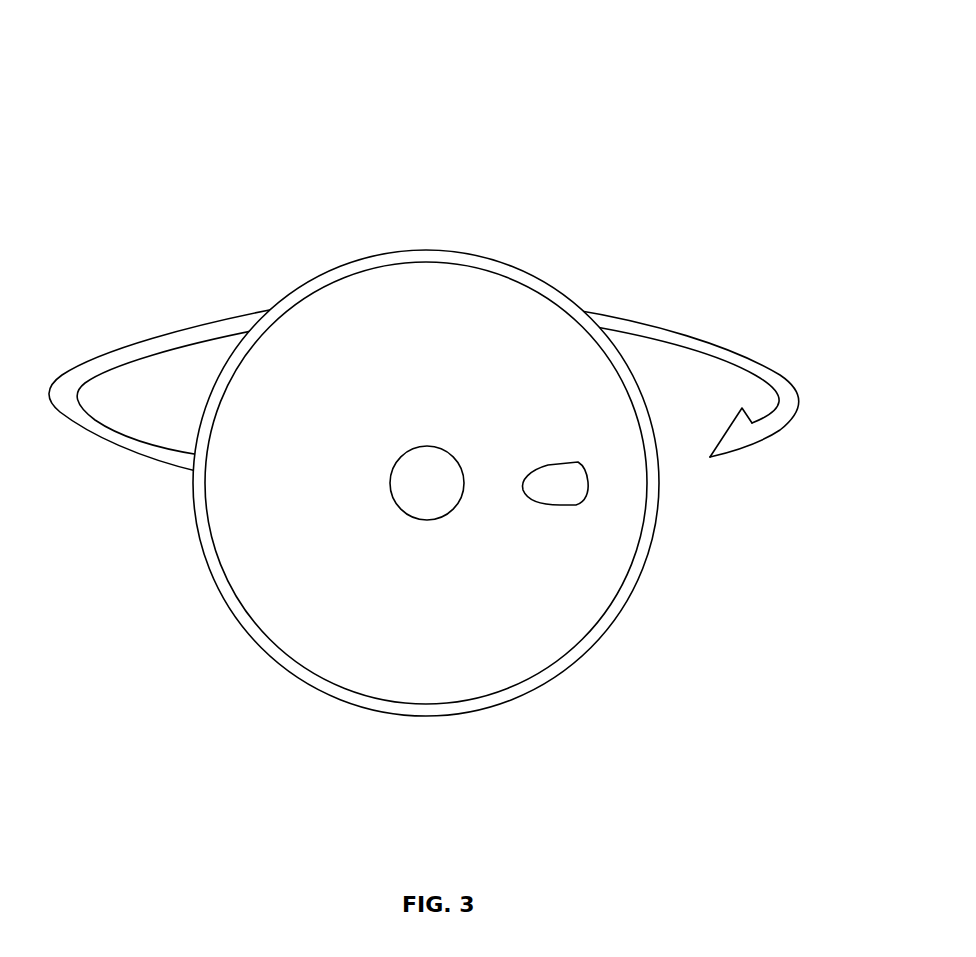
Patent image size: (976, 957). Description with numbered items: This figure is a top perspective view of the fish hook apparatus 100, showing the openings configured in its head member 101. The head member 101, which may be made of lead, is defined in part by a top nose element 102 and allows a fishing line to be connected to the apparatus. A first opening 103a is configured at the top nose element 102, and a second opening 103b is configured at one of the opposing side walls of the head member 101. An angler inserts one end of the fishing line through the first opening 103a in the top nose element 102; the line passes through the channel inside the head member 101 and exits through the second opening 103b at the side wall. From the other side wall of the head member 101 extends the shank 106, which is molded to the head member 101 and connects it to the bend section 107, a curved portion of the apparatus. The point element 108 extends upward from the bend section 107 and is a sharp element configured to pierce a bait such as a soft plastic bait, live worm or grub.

The fish hook apparatus 100 is at (503, 68).
The head member 101 is at (476, 233).
The top nose element 102 is at (352, 303).
The first opening 103a is at (393, 504).
The second opening 103b is at (588, 490).
The shank 106 is at (130, 450).
The bend section 107 is at (620, 313).
The point element 108 is at (748, 446).